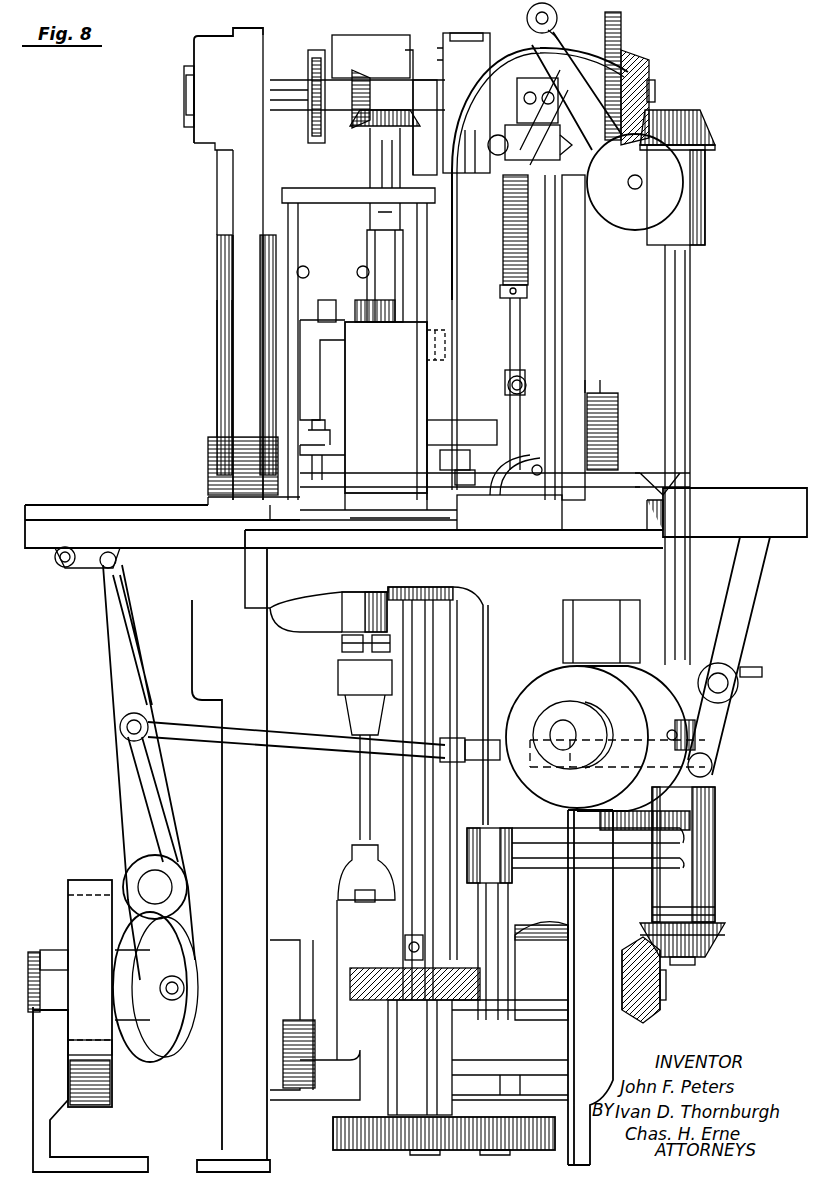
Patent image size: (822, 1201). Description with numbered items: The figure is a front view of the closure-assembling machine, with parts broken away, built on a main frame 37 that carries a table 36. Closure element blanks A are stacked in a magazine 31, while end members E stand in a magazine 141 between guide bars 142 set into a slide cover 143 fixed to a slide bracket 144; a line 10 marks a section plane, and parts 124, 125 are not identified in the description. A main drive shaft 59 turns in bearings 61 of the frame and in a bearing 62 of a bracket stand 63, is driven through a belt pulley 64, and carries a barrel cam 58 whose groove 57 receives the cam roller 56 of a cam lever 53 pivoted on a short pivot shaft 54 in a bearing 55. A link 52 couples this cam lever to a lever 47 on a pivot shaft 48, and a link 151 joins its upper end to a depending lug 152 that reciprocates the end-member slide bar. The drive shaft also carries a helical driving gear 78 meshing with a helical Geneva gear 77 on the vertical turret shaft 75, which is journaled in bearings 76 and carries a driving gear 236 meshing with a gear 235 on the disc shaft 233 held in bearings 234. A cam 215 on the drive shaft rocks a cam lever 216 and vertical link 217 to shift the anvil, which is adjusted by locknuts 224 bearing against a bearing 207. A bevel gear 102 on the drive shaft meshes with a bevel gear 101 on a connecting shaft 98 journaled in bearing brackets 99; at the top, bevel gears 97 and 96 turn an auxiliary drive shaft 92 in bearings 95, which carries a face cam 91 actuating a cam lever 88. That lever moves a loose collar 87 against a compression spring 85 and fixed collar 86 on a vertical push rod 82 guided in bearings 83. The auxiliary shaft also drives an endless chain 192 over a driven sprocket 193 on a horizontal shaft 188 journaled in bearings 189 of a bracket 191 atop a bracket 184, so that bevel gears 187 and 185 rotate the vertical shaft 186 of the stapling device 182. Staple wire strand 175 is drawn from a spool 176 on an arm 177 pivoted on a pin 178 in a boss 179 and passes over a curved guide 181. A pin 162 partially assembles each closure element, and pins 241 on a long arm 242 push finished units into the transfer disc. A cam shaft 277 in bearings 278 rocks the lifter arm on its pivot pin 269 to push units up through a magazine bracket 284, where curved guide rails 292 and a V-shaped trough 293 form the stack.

The driven sprocket 193 is at (270, 138).
The bracket 191 is at (298, 172).
The guide bars 142 is at (262, 272).
The magazine 141 is at (208, 433).
The end members E is at (198, 446).
The slide cover 143 is at (150, 512).
The slide bracket 144 is at (162, 526).
The section line 10 is at (205, 478).
The bearings 189 is at (288, 80).
The endless chain 192 is at (316, 50).
The bevel gear 187 is at (358, 70).
The bearings 95 is at (380, 36).
The horizontal shaft 188 is at (380, 110).
The bevel gear 185 is at (372, 135).
The member 125 is at (432, 55).
The block 124 is at (476, 50).
The bearings 83 is at (492, 75).
The pivot pin 178 is at (552, 10).
The boss 179 is at (556, 33).
The arm 177 is at (560, 47).
The curved guide 181 is at (560, 66).
The face cam 91 is at (622, 20).
The bevel gear 96 is at (642, 65).
The auxiliary drive shaft 92 is at (656, 88).
The bevel gear 97 is at (700, 130).
The spool 176 is at (660, 166).
The strand 175 is at (602, 140).
The bearing brackets 99 is at (692, 220).
The connecting shaft 98 is at (676, 352).
The cam lever 88 is at (580, 150).
The loose collar 87 is at (505, 160).
The compression spring 85 is at (505, 240).
The fixed collar 86 is at (500, 290).
The vertical push rod 82 is at (510, 310).
The vertical shaft 186 is at (372, 220).
The bracket 184 is at (357, 351).
The stapling device 182 is at (363, 396).
The long arm 242 is at (427, 432).
The pin 162 is at (332, 470).
The pins 241 is at (455, 476).
The magazine bracket 284 is at (416, 511).
The curved guide rails 292 is at (532, 448).
The magazine 31 is at (606, 386).
The closure element blanks A is at (612, 392).
The V-shaped trough 293 is at (668, 490).
The table 36 is at (503, 540).
The main frame 37 is at (205, 602).
The bearings 61 is at (222, 1020).
The depending lug 152 is at (57, 562).
The link 151 is at (90, 568).
The cam lever 53 is at (118, 668).
The bearing 55 is at (180, 845).
The short pivot shaft 54 is at (155, 887).
The link 52 is at (240, 740).
The bearing 62 is at (58, 975).
The main drive shaft 59 is at (30, 985).
The groove 57 is at (165, 1045).
The barrel cam 58 is at (178, 1050).
The cam roller 56 is at (175, 1000).
The belt pulley 64 is at (112, 1100).
The bracket stand 63 is at (92, 1148).
The bearings 76 is at (428, 595).
The bearing 207 is at (360, 610).
The locknuts 224 is at (342, 650).
The vertical shaft 75 is at (420, 660).
The vertical link 217 is at (358, 780).
The cam lever 216 is at (325, 890).
The helical driving gear 78 is at (413, 935).
The helical Geneva gear 77 is at (372, 1000).
The cam 215 is at (300, 1090).
The driving gear 236 is at (370, 1150).
The gear 235 is at (508, 1152).
The bearings 234 is at (505, 830).
The vertical shaft 233 is at (492, 908).
The cam shaft 277 is at (556, 727).
The bearings 278 is at (560, 718).
The pivot pin 269 is at (668, 740).
The lever 47 is at (745, 578).
The short pivot shaft 48 is at (722, 672).
The bevel gear 101 is at (720, 952).
The bevel gear 102 is at (655, 1015).